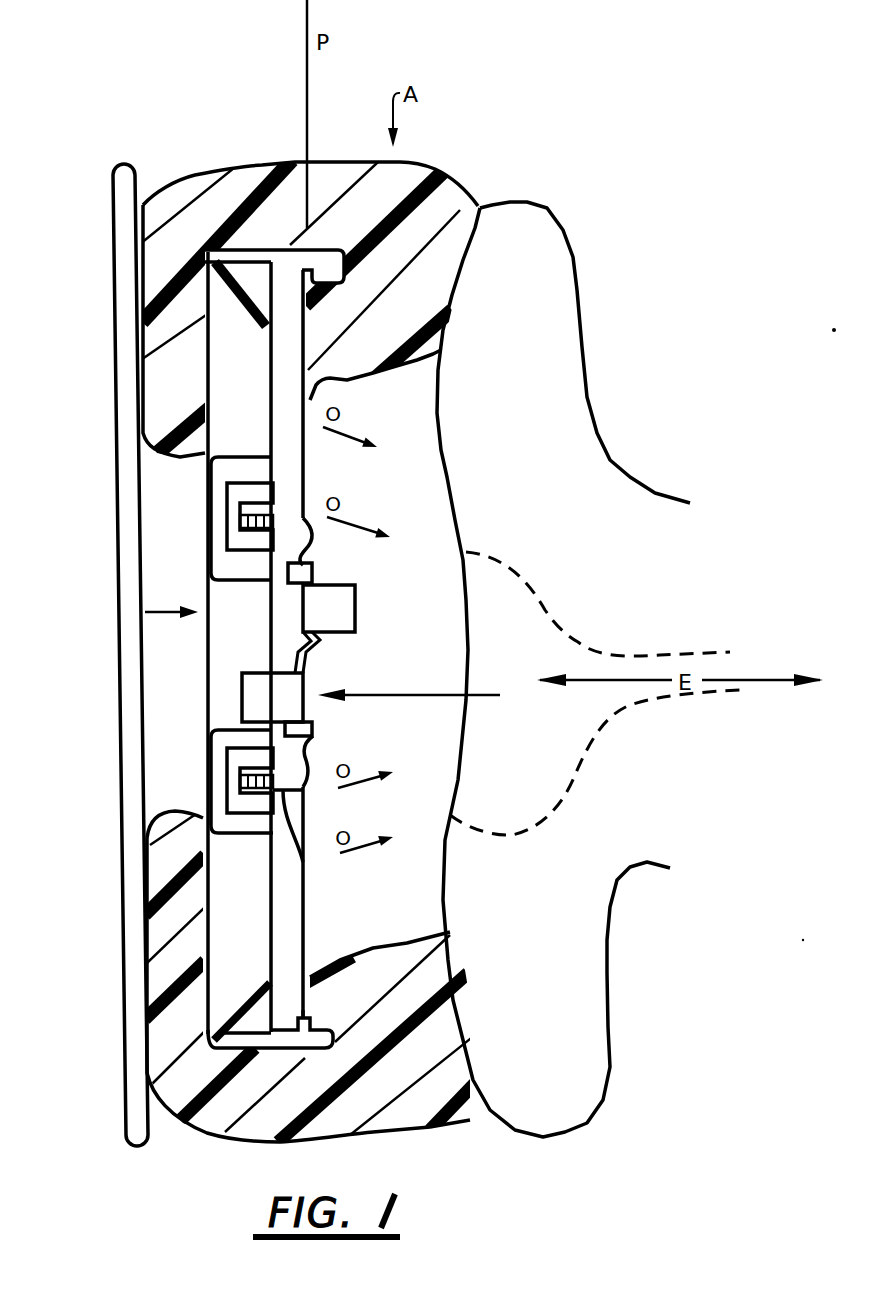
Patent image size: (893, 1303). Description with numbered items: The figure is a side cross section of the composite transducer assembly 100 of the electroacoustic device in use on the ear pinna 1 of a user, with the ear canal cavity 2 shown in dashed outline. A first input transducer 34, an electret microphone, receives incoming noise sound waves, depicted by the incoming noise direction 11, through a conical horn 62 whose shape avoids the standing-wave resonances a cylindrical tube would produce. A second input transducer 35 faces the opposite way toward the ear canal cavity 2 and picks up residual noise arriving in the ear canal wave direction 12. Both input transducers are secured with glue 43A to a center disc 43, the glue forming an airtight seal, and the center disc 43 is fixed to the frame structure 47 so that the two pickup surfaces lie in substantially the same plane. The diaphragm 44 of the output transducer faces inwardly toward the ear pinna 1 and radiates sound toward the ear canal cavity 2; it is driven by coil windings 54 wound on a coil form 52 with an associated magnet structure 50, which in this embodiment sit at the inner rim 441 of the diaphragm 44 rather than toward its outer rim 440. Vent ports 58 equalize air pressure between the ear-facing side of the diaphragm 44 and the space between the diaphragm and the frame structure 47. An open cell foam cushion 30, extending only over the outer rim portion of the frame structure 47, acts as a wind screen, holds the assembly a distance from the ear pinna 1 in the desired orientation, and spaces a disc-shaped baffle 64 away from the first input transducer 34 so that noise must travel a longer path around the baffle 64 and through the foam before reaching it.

The composite transducer assembly 100 is at (85, 142).
The ear pinna 1 is at (563, 267).
The ear canal cavity 2 is at (572, 648).
The cushion 30 is at (408, 1102).
The disc-shaped baffle 64 is at (124, 236).
The frame structure 47 is at (232, 645).
The vent ports 58 is at (262, 1038).
The diaphragm 44 is at (303, 888).
The outer rim 440 is at (302, 985).
The inner rim 441 is at (305, 782).
The first input transducer 34 is at (347, 603).
The second input transducer 35 is at (290, 690).
The glue 43A is at (303, 735).
The center disc 43 is at (313, 735).
The coil form 52 is at (303, 860).
The conical horn 62 is at (213, 590).
The magnet structure 50 is at (171, 781).
The coil windings 54 is at (223, 780).
The incoming noise direction I1 11 is at (171, 601).
The ear canal wave direction I2 12 is at (409, 685).